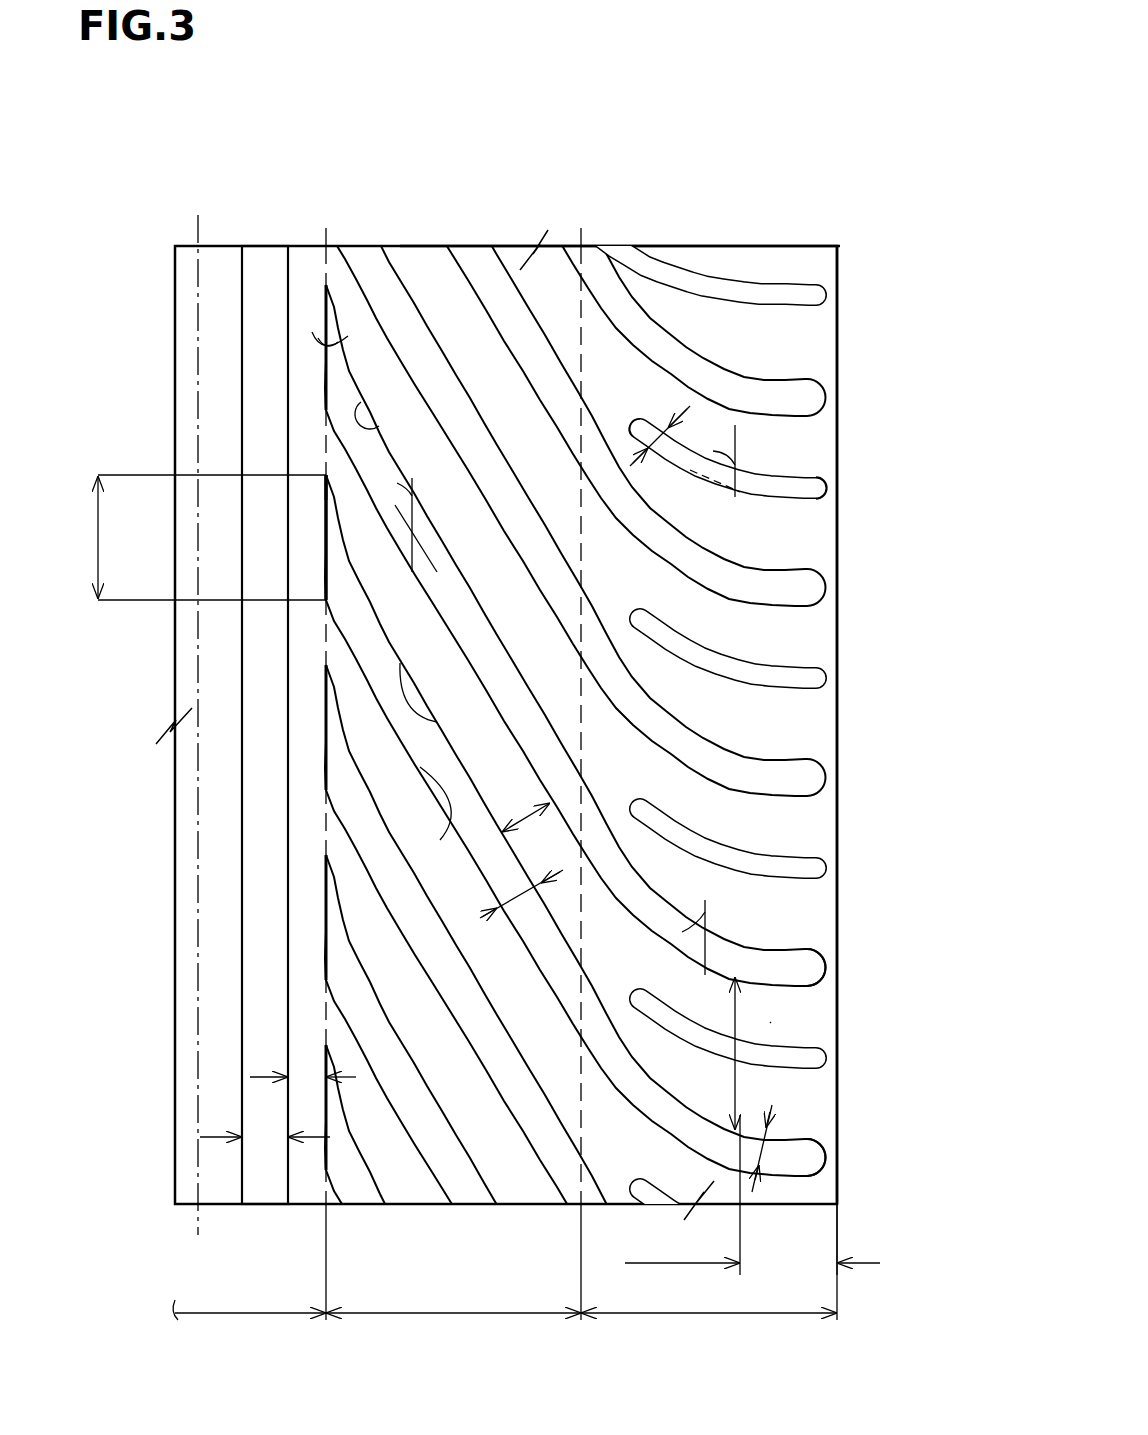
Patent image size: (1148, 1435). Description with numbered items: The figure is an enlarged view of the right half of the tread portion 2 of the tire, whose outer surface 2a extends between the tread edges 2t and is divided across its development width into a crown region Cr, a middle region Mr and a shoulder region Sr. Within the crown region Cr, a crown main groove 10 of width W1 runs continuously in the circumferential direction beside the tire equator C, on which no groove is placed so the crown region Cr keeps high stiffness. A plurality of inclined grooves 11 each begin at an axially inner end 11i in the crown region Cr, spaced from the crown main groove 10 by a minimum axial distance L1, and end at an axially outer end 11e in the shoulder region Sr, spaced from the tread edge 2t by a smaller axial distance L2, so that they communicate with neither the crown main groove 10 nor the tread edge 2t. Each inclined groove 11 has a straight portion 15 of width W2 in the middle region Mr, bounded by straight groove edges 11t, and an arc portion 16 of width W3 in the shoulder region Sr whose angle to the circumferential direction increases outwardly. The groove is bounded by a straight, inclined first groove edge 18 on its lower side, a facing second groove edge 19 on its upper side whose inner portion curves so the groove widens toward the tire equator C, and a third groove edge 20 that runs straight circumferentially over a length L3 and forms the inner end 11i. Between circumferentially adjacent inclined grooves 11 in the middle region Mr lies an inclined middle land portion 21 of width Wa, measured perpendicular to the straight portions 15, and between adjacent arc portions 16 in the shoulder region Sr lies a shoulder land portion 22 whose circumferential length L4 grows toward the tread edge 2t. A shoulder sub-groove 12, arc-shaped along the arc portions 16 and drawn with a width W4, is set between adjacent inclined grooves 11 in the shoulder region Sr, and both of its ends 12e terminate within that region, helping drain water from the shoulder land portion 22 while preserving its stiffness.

The tread portion 2 is at (790, 262).
The outer surface 2a is at (550, 280).
The tread edge 2t is at (838, 275).
The crown main groove 10 is at (262, 288).
The inclined groove 11 is at (328, 390).
The axially outer end 11e is at (830, 1152).
The axially inner end 11i is at (326, 508).
The groove edge 11t is at (437, 722).
The shoulder sub-groove 12 is at (770, 497).
The end of shoulder sub-groove 12e is at (634, 418).
The straight portion 15 is at (630, 628).
The arc portion 16 is at (735, 958).
The first groove edge 18 is at (440, 840).
The second groove edge 19 is at (378, 426).
The third groove edge 20 is at (326, 556).
The middle land portion 21 is at (462, 1095).
The shoulder land portion 22 is at (770, 1022).
The tire equator C is at (197, 713).
The crown region Cr is at (249, 1299).
The middle region Mr is at (453, 1296).
The shoulder region Sr is at (709, 1296).
The minimum axial distance L1 is at (300, 1077).
The axial distance L2 is at (754, 1195).
The circumferential length L3 is at (190, 537).
The circumferential length L4 is at (735, 1055).
The width W1 is at (262, 1135).
The width W2 is at (517, 897).
The width W3 is at (770, 1125).
The width W4 is at (660, 432).
The width Wa is at (528, 818).